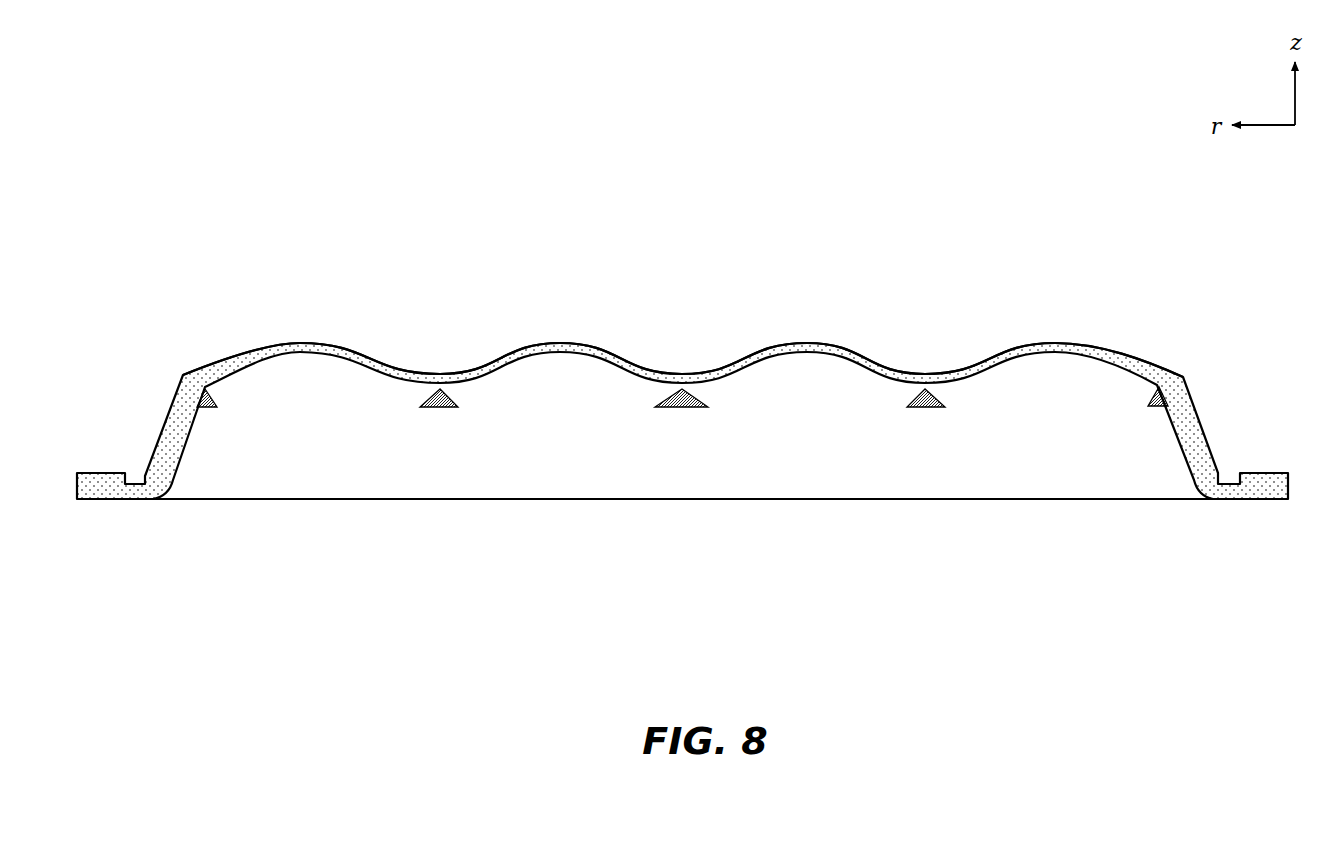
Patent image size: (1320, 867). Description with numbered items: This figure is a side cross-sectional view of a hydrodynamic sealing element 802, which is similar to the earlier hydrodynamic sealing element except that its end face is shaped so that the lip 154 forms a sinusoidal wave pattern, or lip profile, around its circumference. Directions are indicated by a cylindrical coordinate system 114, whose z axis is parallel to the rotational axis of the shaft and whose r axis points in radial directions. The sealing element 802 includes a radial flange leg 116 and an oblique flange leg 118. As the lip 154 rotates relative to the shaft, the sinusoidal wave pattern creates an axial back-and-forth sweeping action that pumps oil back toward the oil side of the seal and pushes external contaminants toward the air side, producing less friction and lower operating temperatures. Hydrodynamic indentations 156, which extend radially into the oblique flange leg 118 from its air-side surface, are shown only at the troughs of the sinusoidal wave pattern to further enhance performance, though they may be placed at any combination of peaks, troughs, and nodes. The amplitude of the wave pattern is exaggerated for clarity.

The hydrodynamic sealing element 802 is at (143, 208).
The cylindrical coordinate system 114 is at (1248, 68).
The radial flange leg 116 is at (1268, 502).
The oblique flange leg 118 is at (1208, 432).
The lip 154 is at (568, 358).
The hydrodynamic indentations 156 is at (207, 411).